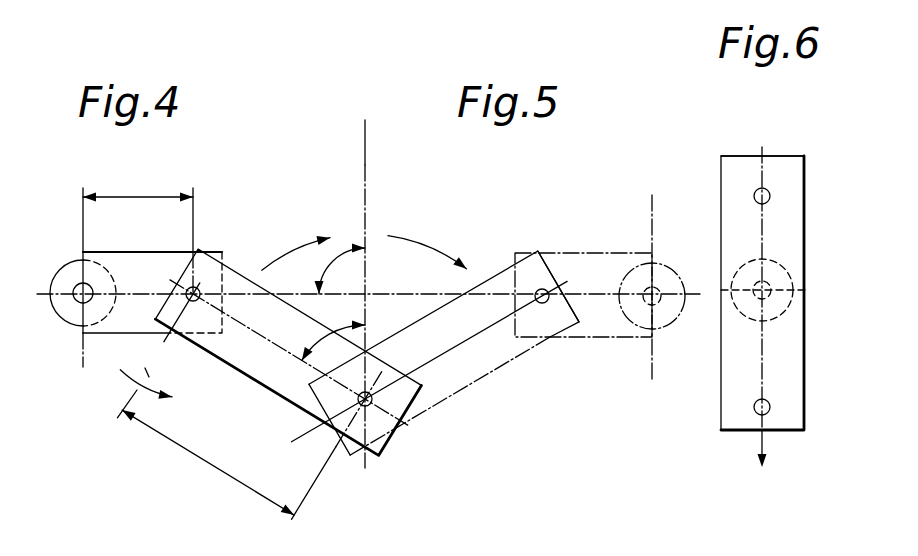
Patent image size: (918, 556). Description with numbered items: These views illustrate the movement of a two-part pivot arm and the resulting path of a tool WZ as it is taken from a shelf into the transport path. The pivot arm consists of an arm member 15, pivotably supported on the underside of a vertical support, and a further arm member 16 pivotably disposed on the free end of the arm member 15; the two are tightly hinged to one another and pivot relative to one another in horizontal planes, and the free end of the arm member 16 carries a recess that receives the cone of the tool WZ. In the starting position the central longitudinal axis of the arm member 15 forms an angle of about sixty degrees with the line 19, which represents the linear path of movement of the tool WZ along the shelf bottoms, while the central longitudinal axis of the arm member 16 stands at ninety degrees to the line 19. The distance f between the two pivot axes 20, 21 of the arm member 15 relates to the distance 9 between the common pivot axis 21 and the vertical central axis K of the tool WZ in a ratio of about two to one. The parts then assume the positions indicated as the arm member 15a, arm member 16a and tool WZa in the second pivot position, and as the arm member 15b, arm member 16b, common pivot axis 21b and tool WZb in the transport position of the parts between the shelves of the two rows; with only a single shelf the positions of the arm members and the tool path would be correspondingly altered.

In FIG. 4, the distance between tool spindle axis and pivot 9 is at (138, 230).
In FIG. 4, the arm member 15 is at (288, 352).
In FIG. 5, the arm member in second pivot position 15a is at (436, 353).
In FIG. 6, the arm member in transport position 15b is at (739, 288).
In FIG. 4, the further arm member 16 is at (158, 350).
In FIG. 5, the further arm member in second pivot position 16a is at (564, 251).
In FIG. 6, the further arm member in transport position 16b is at (718, 179).
In FIG. 5, the line 19 is at (344, 294).
In FIG. 4, the pivot axis 20 is at (377, 439).
In FIG. 6, the pivot axis 20 is at (742, 436).
In FIG. 4, the common pivot axis 21 is at (208, 265).
In FIG. 5, the common pivot axis 21 is at (536, 260).
In FIG. 6, the common pivot axis in transport position 21b is at (762, 135).
In FIG. 4, the vertical central axis of the tool K is at (72, 277).
In FIG. 4, the tool WZ is at (152, 325).
In FIG. 5, the tool in second pivot position WZa is at (600, 293).
In FIG. 6, the tool in transport position WZb is at (786, 305).
In FIG. 4, the distance between the two pivot axes of the arm f is at (229, 464).